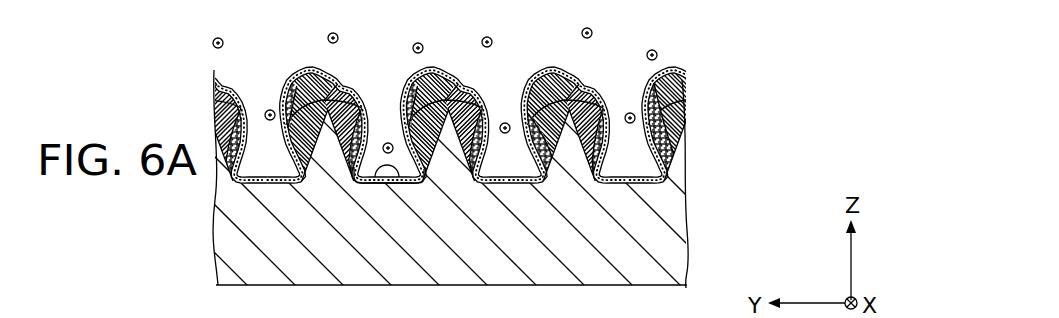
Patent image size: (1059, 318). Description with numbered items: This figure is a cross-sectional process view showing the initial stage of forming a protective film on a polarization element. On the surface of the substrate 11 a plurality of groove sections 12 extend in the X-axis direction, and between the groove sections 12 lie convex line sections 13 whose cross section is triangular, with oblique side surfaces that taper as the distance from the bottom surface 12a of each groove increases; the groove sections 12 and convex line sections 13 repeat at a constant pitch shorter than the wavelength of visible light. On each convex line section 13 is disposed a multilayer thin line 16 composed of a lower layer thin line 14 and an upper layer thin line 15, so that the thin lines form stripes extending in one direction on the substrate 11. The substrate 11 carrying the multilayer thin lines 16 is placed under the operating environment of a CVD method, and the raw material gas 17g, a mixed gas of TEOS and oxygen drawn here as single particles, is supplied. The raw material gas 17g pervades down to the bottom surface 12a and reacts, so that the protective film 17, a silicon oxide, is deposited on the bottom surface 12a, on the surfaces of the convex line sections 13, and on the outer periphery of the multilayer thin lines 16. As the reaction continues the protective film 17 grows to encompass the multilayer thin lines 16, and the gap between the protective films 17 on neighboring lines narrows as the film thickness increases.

The substrate 11 is at (670, 247).
The groove section 12 is at (400, 165).
The bottom surface 12a is at (399, 178).
The convex line section 13 is at (556, 162).
The lower layer thin line 14 is at (628, 157).
The upper layer thin line 15 is at (676, 125).
The multilayer thin line 16 is at (443, 195).
The protective film 17 is at (630, 100).
The raw material gas 17g is at (647, 51).